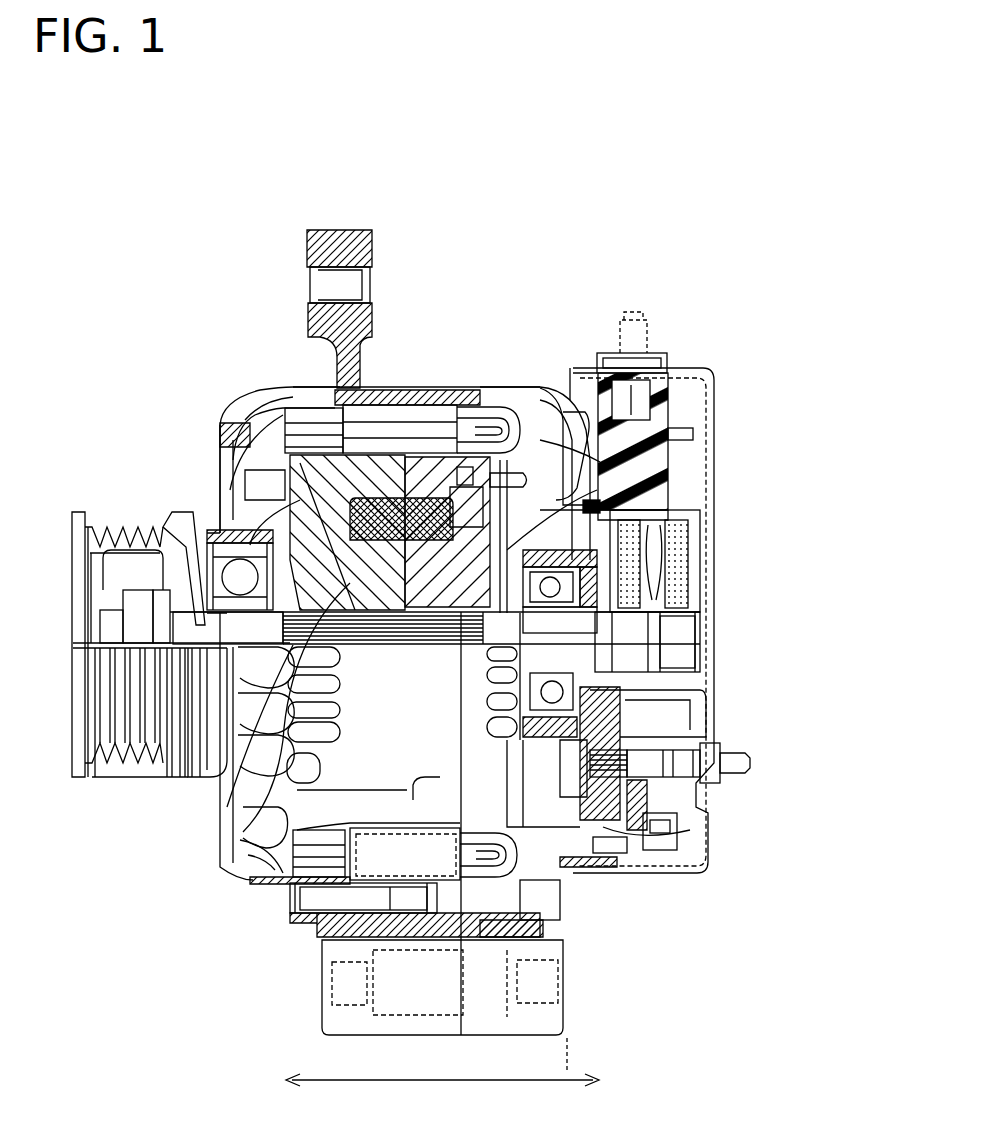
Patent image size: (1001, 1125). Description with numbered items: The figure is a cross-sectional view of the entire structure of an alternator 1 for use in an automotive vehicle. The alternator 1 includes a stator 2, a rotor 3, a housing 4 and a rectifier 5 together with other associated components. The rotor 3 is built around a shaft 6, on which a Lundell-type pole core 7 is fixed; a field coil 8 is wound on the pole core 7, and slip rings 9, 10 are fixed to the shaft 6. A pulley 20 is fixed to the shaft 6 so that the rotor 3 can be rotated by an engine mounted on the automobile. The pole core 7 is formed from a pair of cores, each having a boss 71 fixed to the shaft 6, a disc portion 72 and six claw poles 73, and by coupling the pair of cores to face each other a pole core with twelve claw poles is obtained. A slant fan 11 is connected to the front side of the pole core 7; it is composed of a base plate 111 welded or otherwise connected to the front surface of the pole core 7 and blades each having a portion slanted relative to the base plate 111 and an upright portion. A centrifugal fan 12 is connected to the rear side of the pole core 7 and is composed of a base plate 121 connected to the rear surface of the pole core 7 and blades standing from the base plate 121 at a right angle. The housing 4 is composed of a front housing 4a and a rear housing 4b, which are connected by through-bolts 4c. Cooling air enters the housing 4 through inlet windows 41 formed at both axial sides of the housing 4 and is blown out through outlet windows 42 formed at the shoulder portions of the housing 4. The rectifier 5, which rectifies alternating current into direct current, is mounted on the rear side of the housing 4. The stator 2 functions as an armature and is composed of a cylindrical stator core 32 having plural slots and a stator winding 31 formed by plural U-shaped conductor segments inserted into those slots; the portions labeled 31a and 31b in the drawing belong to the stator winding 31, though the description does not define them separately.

The alternator 1 is at (626, 178).
The stator 2 is at (524, 426).
The rotor 3 is at (252, 403).
The housing 4 is at (478, 322).
The front housing 4a is at (426, 398).
The rear housing 4b is at (465, 398).
The through-bolts 4c is at (290, 903).
The rectifier 5 is at (703, 823).
The shaft 6 is at (200, 618).
The Lundell-type pole core 7 is at (245, 802).
The field coil 8 is at (388, 497).
The slip ring 9 is at (630, 630).
The slip ring 10 is at (683, 650).
The slant fan 11 is at (232, 492).
The centrifugal fan 12 is at (650, 440).
The pulley 20 is at (76, 512).
The stator winding 31 is at (269, 408).
The rear frame 31a is at (522, 402).
The front frame 31b is at (280, 420).
The stator core 32 is at (405, 405).
The inlet windows 41 is at (222, 528).
The outlet windows 42 is at (290, 387).
The boss 71 is at (623, 573).
The disc portion 72 is at (258, 420).
The claw poles 73 is at (360, 385).
The base plate 111 is at (200, 617).
The base plate 121 is at (580, 502).